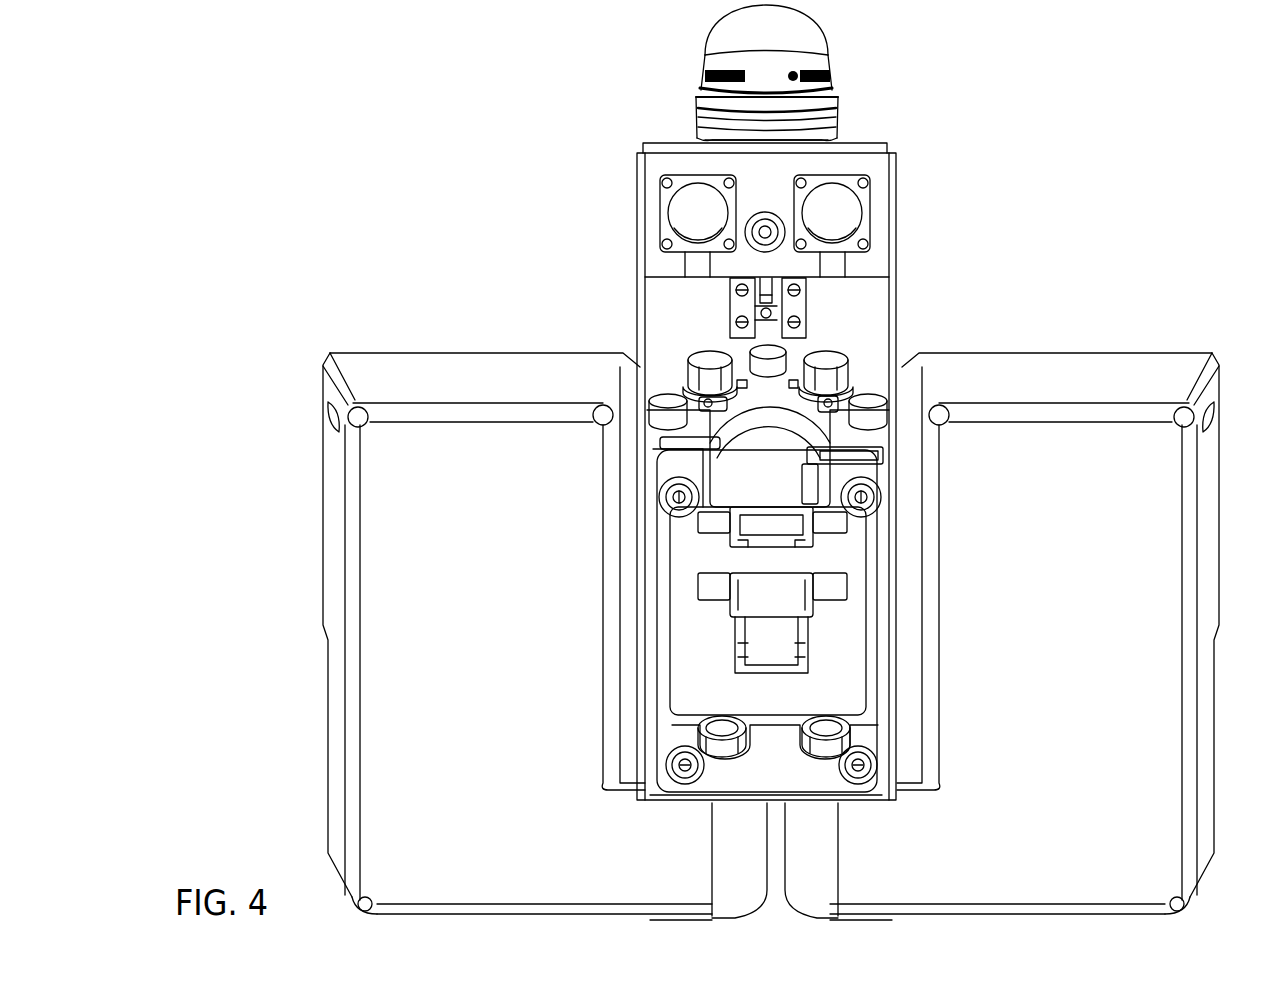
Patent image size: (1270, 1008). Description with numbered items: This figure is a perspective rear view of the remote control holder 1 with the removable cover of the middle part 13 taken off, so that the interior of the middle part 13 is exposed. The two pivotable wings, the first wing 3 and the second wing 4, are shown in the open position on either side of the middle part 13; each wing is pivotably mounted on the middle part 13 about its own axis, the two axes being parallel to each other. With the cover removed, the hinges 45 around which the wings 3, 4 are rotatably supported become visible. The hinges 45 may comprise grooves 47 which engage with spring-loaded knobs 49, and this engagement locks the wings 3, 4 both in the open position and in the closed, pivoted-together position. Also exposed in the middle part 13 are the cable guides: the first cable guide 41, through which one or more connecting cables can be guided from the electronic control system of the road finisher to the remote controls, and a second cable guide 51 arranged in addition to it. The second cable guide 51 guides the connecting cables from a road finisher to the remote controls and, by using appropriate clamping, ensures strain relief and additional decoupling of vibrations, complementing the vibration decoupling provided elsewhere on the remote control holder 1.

The remote control holder 1 is at (268, 232).
The first wing 3 is at (1135, 677).
The second wing 4 is at (427, 677).
The middle part 13 is at (642, 648).
The first cable guide 41 is at (812, 492).
The hinges 45 is at (697, 352).
The grooves 47 is at (793, 383).
The spring-loaded knobs 49 is at (710, 423).
The second cable guide 51 is at (727, 606).